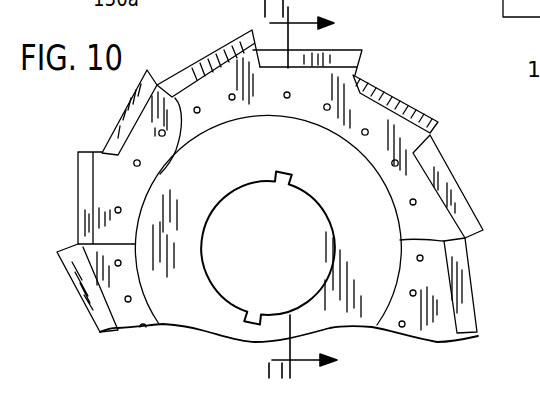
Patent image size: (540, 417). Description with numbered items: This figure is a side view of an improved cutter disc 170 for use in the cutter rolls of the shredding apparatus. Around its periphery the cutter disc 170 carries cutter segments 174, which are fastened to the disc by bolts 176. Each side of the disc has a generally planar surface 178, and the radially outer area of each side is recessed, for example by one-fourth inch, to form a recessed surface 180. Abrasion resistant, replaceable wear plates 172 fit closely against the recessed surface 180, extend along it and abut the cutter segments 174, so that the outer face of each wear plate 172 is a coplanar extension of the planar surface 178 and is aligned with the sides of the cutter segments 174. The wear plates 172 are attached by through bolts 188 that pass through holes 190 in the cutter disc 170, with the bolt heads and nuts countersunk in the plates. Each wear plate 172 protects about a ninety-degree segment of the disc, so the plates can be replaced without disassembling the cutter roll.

The cutter disc 170 is at (296, 151).
The wear plate 172 is at (428, 205).
The cutter segment 174 is at (78, 209).
The bolt 176 is at (372, 87).
The planar surface 178 is at (387, 265).
The recessed surface 180 is at (152, 124).
The through bolt 188 is at (327, 110).
The hole 190 is at (140, 164).